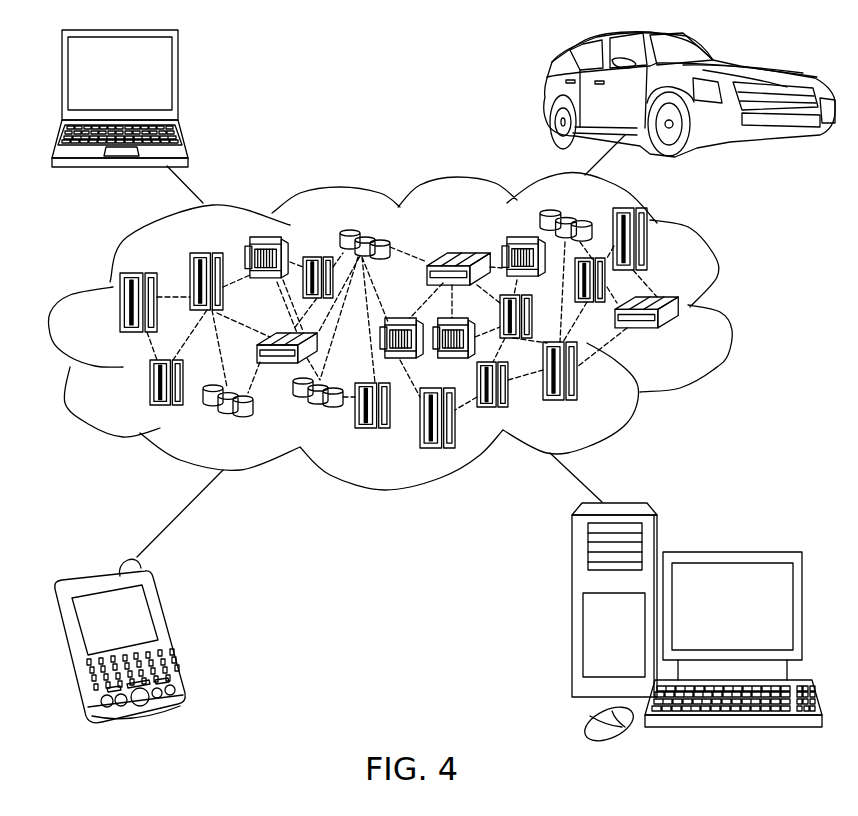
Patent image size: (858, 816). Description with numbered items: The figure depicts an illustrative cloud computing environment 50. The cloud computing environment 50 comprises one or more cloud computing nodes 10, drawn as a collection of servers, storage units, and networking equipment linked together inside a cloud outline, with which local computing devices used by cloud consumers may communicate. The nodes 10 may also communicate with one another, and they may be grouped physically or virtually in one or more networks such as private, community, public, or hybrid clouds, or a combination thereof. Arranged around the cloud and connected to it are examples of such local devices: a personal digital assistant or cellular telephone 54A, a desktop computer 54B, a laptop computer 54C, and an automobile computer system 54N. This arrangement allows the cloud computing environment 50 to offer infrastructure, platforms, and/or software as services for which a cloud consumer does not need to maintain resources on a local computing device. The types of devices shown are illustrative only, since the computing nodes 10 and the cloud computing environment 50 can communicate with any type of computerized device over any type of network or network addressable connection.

The cloud computing nodes 10 is at (693, 341).
The cloud computing environment 50 is at (731, 311).
The personal digital assistant (PDA) or cellular telephone 54A is at (173, 632).
The desktop computer 54B is at (730, 552).
The laptop computer 54C is at (178, 80).
The automobile computer system 54N is at (546, 97).